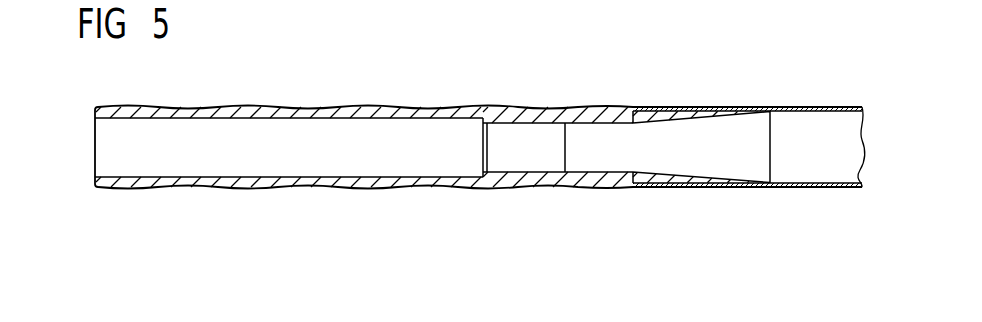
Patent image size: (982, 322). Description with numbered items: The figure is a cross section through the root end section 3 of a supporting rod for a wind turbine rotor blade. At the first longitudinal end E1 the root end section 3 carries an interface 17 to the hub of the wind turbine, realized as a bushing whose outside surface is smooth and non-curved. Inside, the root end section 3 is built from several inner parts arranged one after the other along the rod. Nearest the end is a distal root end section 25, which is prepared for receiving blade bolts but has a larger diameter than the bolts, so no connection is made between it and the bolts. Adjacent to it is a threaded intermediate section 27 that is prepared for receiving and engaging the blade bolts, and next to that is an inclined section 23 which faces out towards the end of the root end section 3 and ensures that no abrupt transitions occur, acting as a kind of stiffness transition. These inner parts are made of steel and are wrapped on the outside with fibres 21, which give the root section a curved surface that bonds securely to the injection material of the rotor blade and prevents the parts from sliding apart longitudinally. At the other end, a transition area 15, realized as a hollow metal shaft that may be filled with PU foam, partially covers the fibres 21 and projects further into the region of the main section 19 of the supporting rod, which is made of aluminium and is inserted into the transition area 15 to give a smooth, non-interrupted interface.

The root end section 3 is at (328, 96).
The interface 17 is at (95, 128).
The first longitudinal end E1 is at (86, 159).
The distal root end section 25 is at (258, 168).
The threaded intermediate section 27 is at (523, 137).
The fibres 21 is at (532, 177).
The inclined section 23 is at (683, 125).
The main section 19 is at (822, 125).
The transition area 15 is at (875, 205).